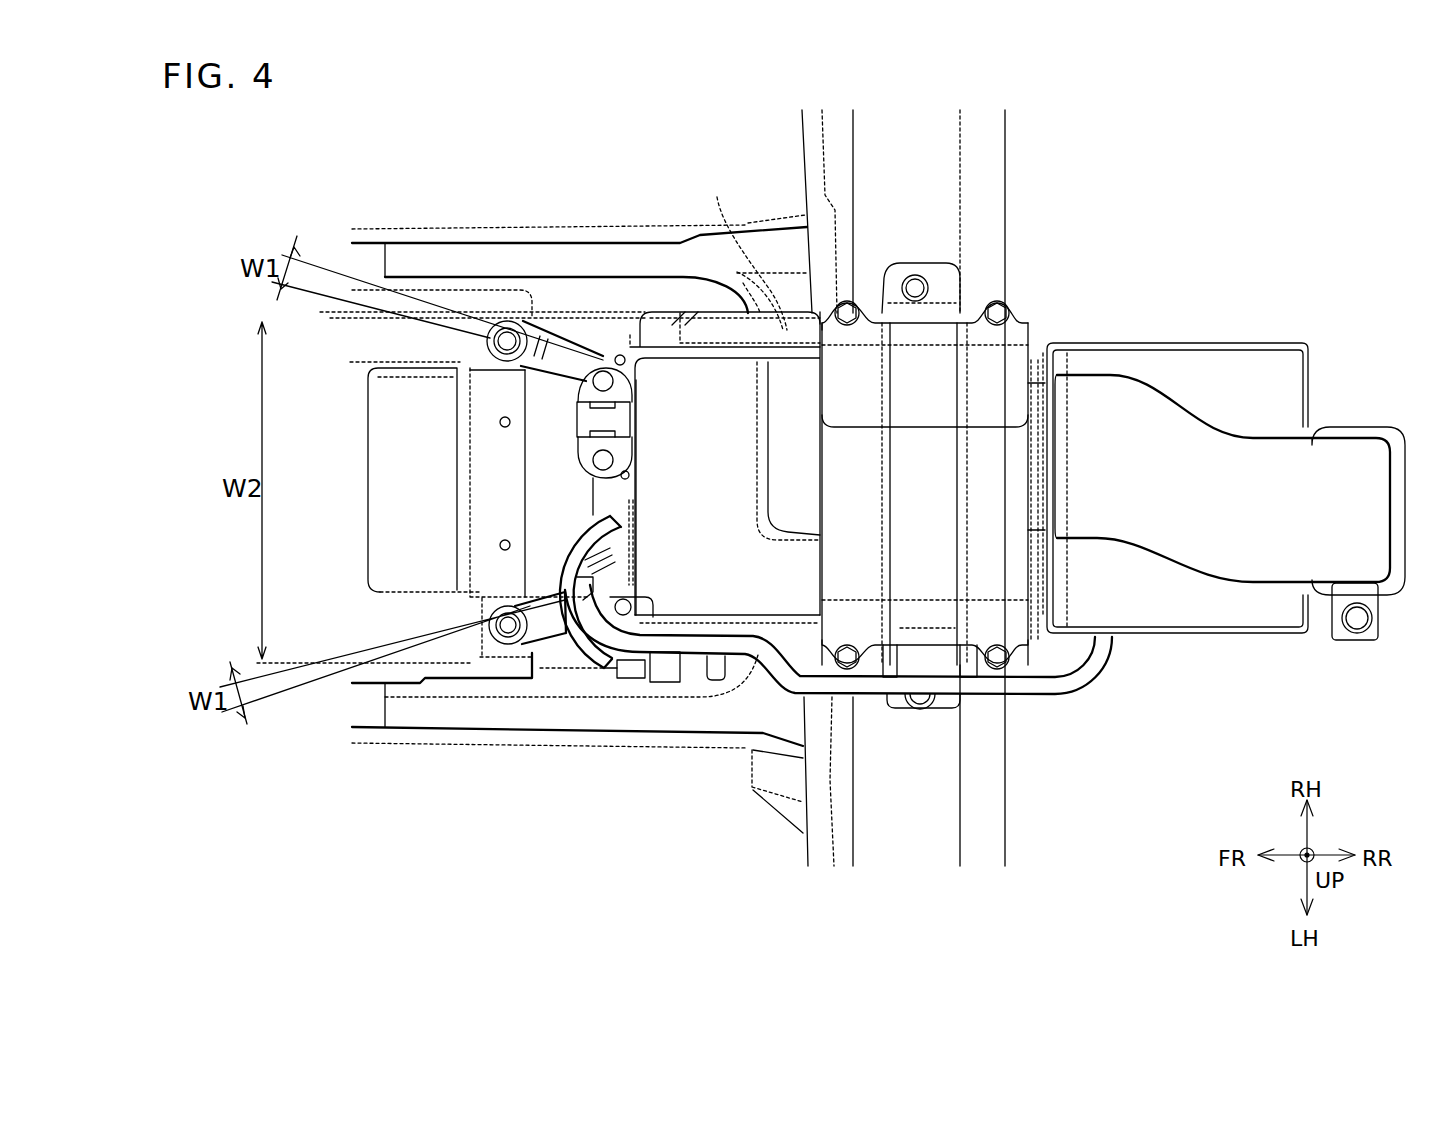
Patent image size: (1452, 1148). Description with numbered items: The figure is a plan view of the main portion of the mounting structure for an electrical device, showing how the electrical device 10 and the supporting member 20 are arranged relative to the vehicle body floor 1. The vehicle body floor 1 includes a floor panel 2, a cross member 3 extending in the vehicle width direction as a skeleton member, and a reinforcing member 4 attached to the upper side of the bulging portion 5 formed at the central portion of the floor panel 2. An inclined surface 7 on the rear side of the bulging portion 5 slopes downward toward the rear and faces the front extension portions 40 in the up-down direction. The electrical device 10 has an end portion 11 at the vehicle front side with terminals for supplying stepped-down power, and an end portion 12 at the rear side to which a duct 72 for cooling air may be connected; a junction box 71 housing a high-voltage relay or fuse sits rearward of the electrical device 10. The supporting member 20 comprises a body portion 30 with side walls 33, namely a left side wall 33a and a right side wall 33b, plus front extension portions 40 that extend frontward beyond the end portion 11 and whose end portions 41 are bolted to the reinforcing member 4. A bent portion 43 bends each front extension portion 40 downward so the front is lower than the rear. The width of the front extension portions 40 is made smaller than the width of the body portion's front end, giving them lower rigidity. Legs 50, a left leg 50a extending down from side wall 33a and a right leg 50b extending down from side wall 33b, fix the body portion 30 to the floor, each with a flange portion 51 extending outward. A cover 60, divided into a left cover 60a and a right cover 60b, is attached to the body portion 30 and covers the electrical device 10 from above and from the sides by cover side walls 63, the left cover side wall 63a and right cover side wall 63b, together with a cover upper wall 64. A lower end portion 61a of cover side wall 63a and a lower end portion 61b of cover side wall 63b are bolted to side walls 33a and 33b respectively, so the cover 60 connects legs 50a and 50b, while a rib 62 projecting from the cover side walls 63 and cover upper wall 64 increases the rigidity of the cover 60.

The vehicle body floor 1 is at (440, 800).
The floor panel 2 is at (606, 800).
The cross member 3 is at (940, 150).
The reinforcing member 4 is at (405, 335).
The bulging portion 5 is at (450, 262).
The inclined surface 7 is at (545, 485).
The electrical device 10 is at (718, 404).
The end portion 11 is at (670, 467).
The end portion 12 is at (1040, 570).
The supporting member 20 is at (1000, 438).
The body portion 30 is at (780, 628).
The side walls 33 is at (826, 488).
The side wall 33a is at (823, 678).
The side wall 33b is at (802, 143).
The front extension portions 40 is at (590, 380).
The end portions 41 is at (508, 336).
The bent portion 43 is at (565, 370).
The legs 50 is at (1000, 488).
The leg 50a is at (945, 695).
The leg 50b is at (950, 270).
The flange portion 51 is at (925, 265).
The cover 60 is at (1000, 498).
The cover 60a is at (996, 647).
The cover 60b is at (1000, 347).
The lower end portion 61a is at (975, 640).
The lower end portion 61b is at (1022, 320).
The rib 62 is at (948, 467).
The cover side walls 63 is at (872, 375).
The cover side wall 63a is at (868, 602).
The cover side wall 63b is at (875, 330).
The cover upper wall 64 is at (1035, 505).
The junction box 71 is at (1290, 378).
The duct 72 is at (1252, 567).